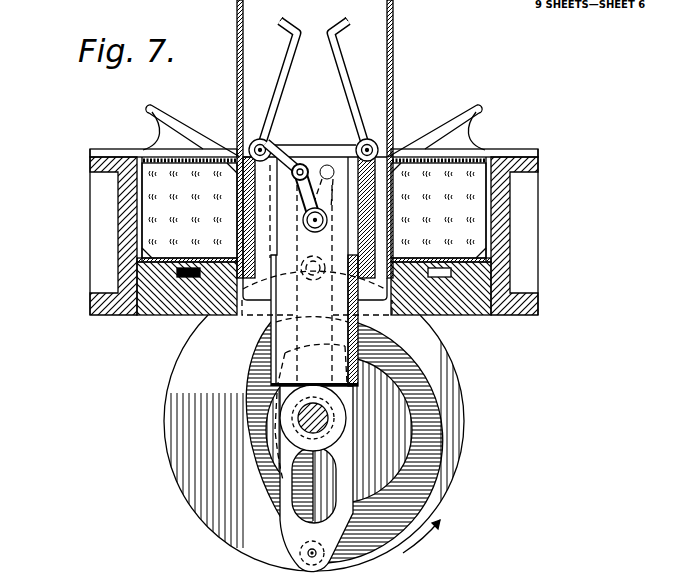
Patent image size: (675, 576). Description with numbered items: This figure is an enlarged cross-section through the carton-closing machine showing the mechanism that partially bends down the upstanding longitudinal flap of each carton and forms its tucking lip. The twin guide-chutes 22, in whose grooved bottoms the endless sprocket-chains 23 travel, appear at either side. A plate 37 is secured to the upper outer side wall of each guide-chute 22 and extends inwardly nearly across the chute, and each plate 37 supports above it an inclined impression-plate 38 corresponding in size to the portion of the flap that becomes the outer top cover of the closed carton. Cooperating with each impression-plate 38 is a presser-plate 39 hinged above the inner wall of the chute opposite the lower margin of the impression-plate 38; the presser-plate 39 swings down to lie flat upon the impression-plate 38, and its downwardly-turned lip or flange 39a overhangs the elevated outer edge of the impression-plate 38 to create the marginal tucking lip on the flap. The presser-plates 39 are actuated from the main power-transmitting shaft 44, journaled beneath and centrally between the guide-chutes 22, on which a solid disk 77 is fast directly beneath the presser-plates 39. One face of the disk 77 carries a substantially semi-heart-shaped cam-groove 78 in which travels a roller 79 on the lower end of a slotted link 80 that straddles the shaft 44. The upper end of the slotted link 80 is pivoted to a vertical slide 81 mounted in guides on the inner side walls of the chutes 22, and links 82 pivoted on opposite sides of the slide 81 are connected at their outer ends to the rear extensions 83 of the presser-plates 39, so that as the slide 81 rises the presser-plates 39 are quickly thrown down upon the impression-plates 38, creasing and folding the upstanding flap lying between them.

The guide-chute 22 is at (137, 226).
The endless sprocket-chain 23 is at (184, 279).
The plate 37 is at (122, 152).
The impression-plate 38 is at (198, 125).
The presser-plate 39 is at (350, 83).
The downwardly-turned lip or flange 39a is at (284, 22).
The main power-transmitting shaft 44 is at (306, 416).
The solid disk 77 is at (452, 405).
The cam-groove 78 is at (425, 456).
The roller 79 is at (325, 559).
The slotted link 80 is at (347, 487).
The vertical slide 81 is at (308, 234).
The link 82 is at (294, 195).
The rear extension 83 is at (276, 148).